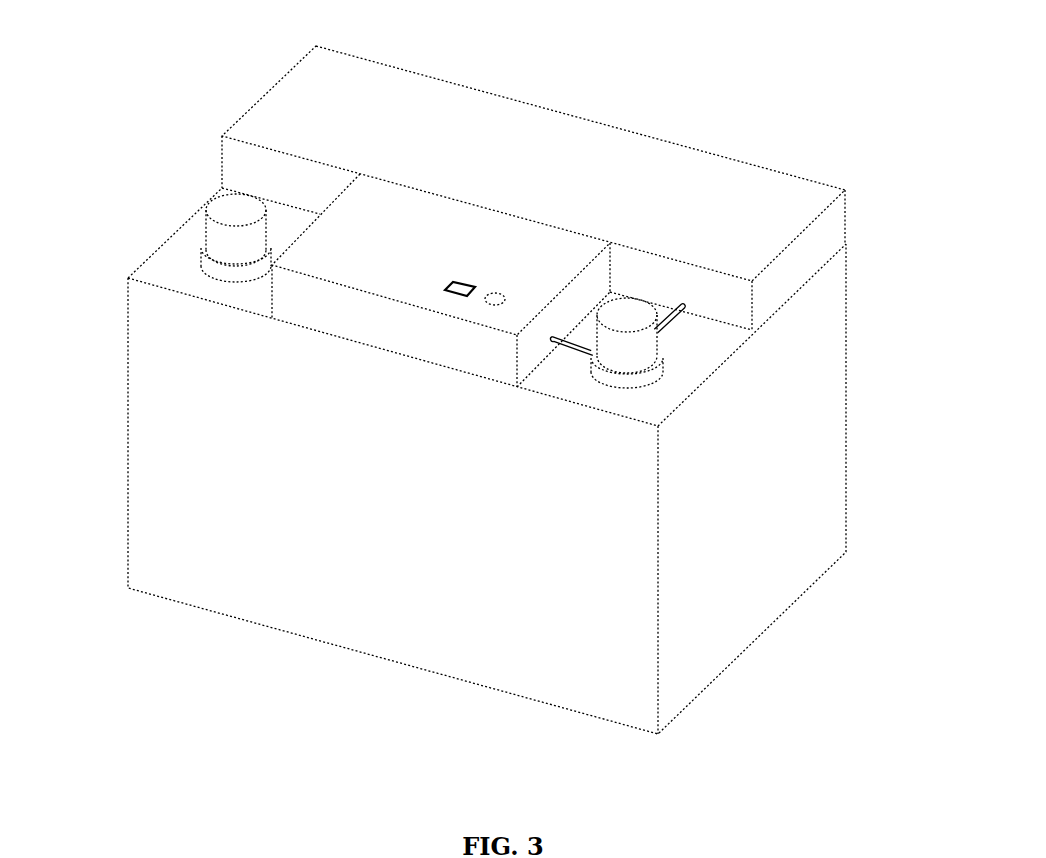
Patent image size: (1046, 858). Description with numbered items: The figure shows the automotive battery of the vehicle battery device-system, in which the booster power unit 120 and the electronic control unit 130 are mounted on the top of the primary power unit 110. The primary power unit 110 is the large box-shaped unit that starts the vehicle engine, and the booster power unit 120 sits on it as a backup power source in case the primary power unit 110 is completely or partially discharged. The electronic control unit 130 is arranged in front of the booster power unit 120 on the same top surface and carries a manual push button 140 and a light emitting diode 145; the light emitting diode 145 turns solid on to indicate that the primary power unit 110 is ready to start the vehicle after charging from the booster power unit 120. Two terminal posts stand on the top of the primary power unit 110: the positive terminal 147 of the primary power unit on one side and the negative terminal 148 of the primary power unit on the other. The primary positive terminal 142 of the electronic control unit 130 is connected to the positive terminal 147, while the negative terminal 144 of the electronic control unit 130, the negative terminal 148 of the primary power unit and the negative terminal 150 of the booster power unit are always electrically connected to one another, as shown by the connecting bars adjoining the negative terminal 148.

The primary power unit 110 is at (773, 560).
The booster power unit 120 is at (479, 143).
The electronic control unit 130 is at (397, 235).
The manual push button 140 is at (462, 282).
The light emitting diode 145 is at (497, 295).
The primary positive terminal 142 is at (227, 277).
The negative terminal 144 is at (575, 345).
The positive terminal 147 is at (223, 238).
The negative terminal 148 is at (625, 340).
The negative terminal 150 is at (675, 317).